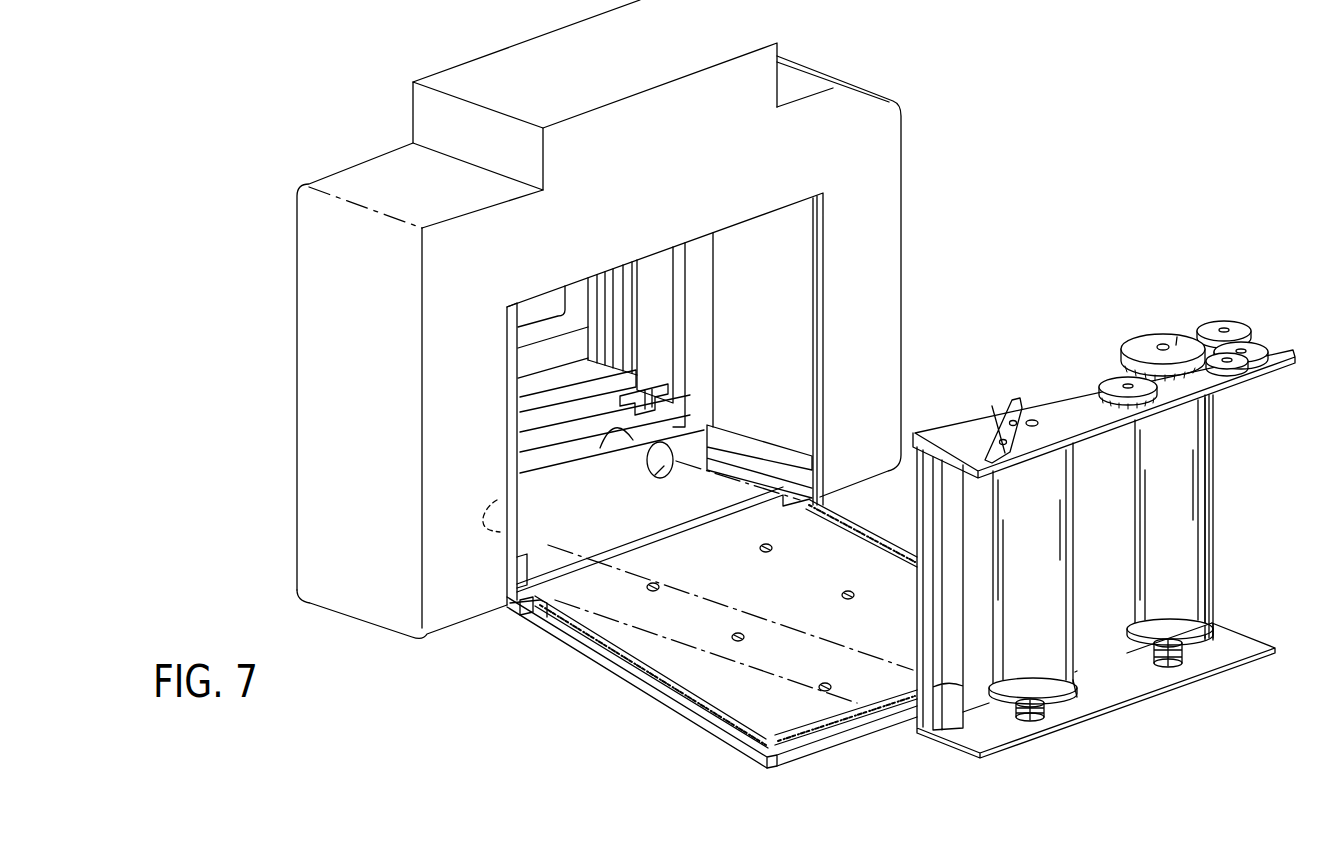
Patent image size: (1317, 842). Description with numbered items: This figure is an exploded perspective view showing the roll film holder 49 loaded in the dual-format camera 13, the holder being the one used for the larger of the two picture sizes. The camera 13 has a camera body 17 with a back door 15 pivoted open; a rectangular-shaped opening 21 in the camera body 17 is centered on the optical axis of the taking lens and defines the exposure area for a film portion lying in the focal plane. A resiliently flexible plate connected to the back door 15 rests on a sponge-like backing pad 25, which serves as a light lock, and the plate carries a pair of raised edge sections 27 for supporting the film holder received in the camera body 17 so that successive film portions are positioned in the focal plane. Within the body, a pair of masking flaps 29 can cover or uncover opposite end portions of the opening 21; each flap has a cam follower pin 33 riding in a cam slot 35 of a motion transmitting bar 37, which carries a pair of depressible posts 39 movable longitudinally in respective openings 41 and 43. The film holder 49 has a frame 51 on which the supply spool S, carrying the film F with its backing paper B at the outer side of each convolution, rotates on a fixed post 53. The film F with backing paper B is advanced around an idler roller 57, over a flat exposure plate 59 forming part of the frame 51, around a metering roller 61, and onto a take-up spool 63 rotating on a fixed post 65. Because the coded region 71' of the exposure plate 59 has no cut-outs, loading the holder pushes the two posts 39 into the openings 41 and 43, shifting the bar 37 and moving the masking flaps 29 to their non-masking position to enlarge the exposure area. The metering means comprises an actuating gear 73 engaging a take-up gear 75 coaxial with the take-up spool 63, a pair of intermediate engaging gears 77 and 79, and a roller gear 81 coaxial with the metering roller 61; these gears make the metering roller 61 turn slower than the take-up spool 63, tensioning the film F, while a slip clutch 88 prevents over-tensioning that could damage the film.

The dual-format camera 13 is at (362, 116).
The back door 15 is at (687, 713).
The camera body 17 is at (297, 388).
The rectangular-shaped opening 21 is at (538, 352).
The sponge-like backing pad 25 is at (603, 657).
The raised edge sections 27 is at (530, 680).
The masking flaps 29 is at (652, 292).
The cam follower pin 33 is at (660, 394).
The cam slot 35 is at (687, 418).
The motion transmitting bar 37 is at (578, 418).
The depressible posts 39 is at (497, 500).
The opening 41 is at (655, 475).
The opening 43 is at (500, 533).
The roll film holder 49 is at (977, 407).
The frame 51 is at (963, 748).
The fixed post 53 is at (1025, 713).
The idler roller 57 is at (918, 727).
The flat exposure plate 59 is at (1111, 504).
The metering roller 61 is at (1213, 602).
The take-up spool 63 is at (1202, 640).
The fixed post 65 is at (1167, 663).
The coded region 71' is at (1122, 692).
The actuating gear 73 is at (1095, 378).
The take-up gear 75 is at (1177, 337).
The intermediate engaging gear 77 is at (1240, 368).
The intermediate engaging gear 79 is at (1253, 343).
The roller gear 81 is at (1225, 320).
The slip clutch 88 is at (1142, 337).
The backing paper B is at (1013, 560).
The film F is at (950, 610).
The supply spool S is at (1077, 697).